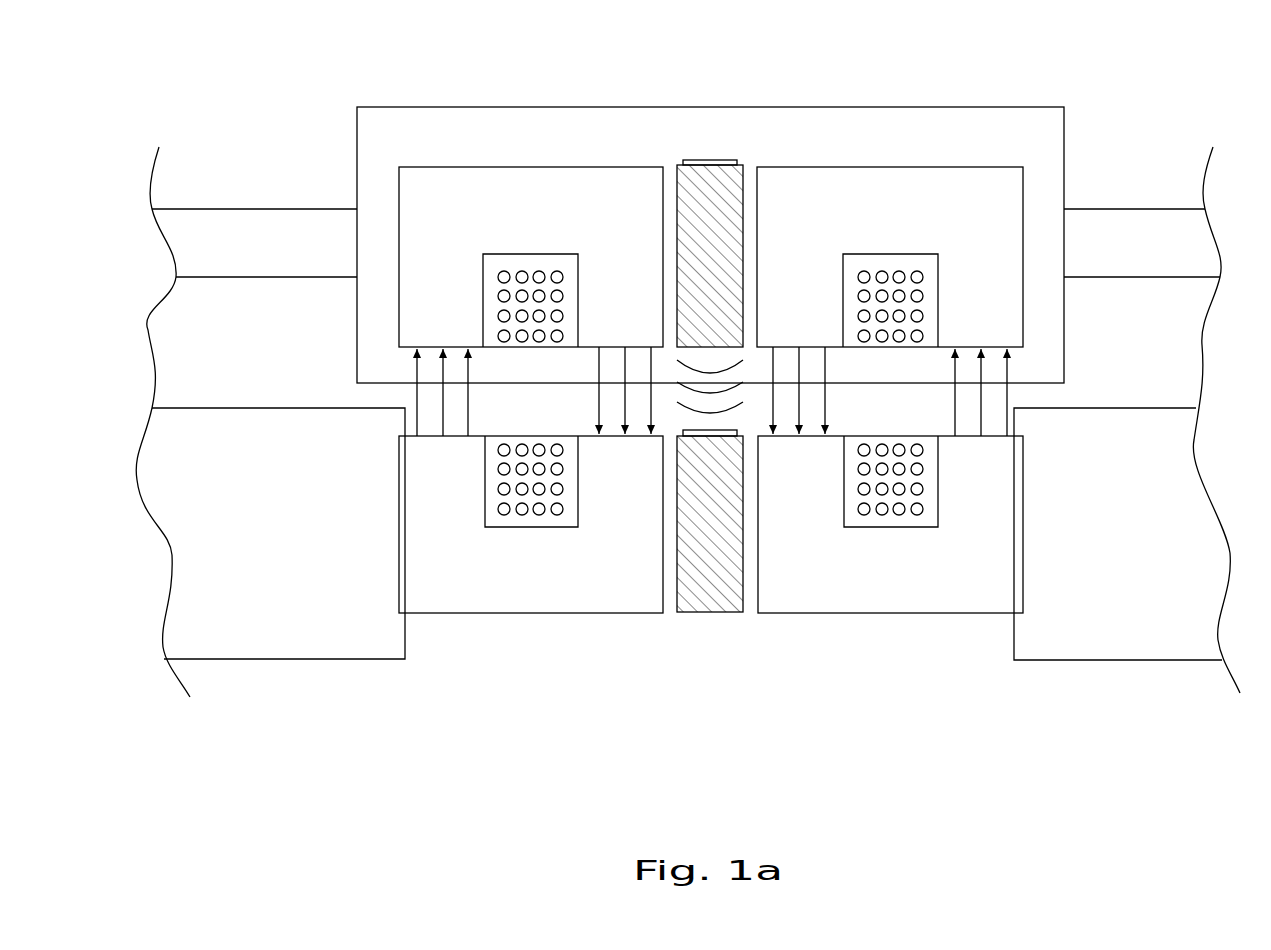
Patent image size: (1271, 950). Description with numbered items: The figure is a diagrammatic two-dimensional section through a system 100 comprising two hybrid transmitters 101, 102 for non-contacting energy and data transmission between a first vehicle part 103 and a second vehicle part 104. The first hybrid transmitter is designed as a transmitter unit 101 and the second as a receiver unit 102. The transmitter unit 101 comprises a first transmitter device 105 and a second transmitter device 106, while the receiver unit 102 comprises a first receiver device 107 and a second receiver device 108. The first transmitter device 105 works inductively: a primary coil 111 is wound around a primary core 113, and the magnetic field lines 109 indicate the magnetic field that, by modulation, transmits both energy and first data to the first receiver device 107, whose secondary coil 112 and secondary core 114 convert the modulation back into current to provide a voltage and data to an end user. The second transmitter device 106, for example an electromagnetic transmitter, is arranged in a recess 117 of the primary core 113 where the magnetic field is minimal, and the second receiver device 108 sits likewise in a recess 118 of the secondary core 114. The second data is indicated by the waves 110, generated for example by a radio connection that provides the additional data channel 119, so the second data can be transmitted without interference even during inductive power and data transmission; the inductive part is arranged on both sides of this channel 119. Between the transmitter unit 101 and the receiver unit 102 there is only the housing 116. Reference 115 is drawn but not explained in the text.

The system 100 is at (890, 760).
The transmitter unit 101 is at (809, 150).
The receiver unit 102 is at (745, 709).
The first vehicle part 103 is at (212, 208).
The second vehicle part 104 is at (250, 662).
The first transmitter device 105 is at (518, 167).
The second transmitter device 106 is at (712, 160).
The first receiver device 107 is at (493, 615).
The second receiver device 108 is at (698, 613).
The magnetic field lines 109 is at (1066, 383).
The waves 110 is at (695, 418).
The primary coil 111 is at (500, 277).
The secondary coil 112 is at (540, 509).
The primary core 113 is at (438, 222).
The secondary core 114 is at (983, 580).
The lower bar cap 115 is at (680, 430).
The housing 116 is at (407, 106).
The recess 117 is at (753, 173).
The recess 118 is at (752, 613).
The additional data channel 119 is at (730, 647).